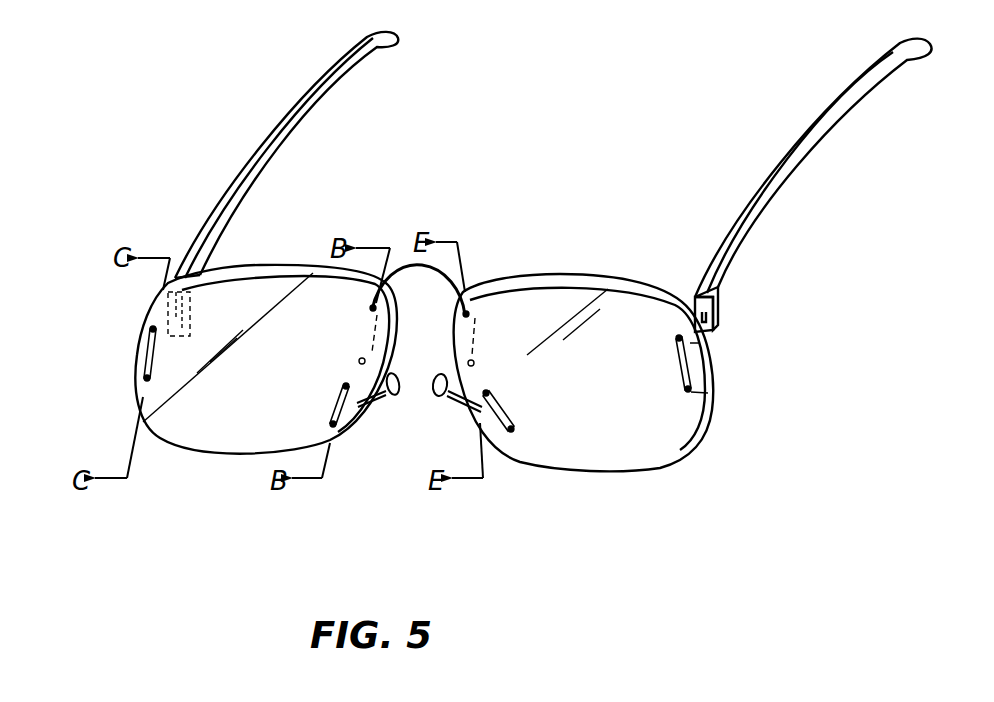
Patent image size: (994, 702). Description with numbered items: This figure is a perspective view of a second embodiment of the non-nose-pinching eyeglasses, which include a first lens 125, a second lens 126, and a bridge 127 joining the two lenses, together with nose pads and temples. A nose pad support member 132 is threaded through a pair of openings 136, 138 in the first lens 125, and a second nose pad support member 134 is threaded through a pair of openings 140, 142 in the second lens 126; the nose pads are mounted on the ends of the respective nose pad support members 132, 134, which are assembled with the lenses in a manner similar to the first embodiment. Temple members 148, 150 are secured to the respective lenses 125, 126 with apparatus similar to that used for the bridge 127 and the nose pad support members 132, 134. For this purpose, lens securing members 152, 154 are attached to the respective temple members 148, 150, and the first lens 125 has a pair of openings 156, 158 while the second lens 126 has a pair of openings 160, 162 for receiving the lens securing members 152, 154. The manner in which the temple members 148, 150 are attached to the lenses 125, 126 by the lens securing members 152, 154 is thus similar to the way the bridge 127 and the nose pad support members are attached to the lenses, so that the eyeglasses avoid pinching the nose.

The first lens 125 is at (262, 267).
The second lens 126 is at (546, 273).
The bridge 127 is at (411, 266).
The nose pad support member 132 is at (338, 405).
The nose pad support member 134 is at (480, 410).
The opening 136 is at (345, 387).
The opening 138 is at (330, 423).
The opening 140 is at (488, 390).
The opening 142 is at (512, 430).
The temple member 148 is at (240, 172).
The temple member 150 is at (768, 180).
The lens securing member 152 is at (143, 357).
The lens securing member 154 is at (683, 375).
The opening 156 is at (150, 330).
The opening 158 is at (143, 381).
The opening 160 is at (678, 338).
The opening 162 is at (687, 392).